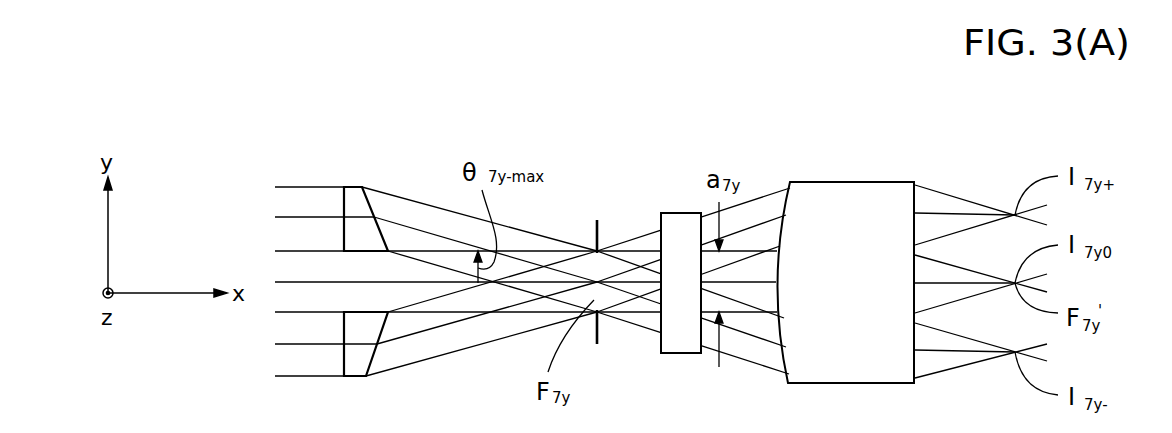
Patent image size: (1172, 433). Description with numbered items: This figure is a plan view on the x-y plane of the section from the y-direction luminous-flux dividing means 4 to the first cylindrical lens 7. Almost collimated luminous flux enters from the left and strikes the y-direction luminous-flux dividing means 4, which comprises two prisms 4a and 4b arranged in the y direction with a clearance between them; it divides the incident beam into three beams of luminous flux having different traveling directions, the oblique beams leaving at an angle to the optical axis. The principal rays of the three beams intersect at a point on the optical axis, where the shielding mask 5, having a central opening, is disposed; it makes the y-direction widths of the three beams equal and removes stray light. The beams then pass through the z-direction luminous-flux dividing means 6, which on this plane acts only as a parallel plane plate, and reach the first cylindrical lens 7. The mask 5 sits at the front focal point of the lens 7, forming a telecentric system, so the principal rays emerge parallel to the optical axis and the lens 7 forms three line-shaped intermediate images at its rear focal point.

The y-direction luminous-flux dividing means 4 is at (413, 88).
The prism 4a is at (358, 207).
The prism 4b is at (358, 327).
The shielding mask 5 is at (598, 221).
The z-direction luminous-flux dividing means 6 is at (680, 218).
The first cylindrical lens 7 is at (862, 200).